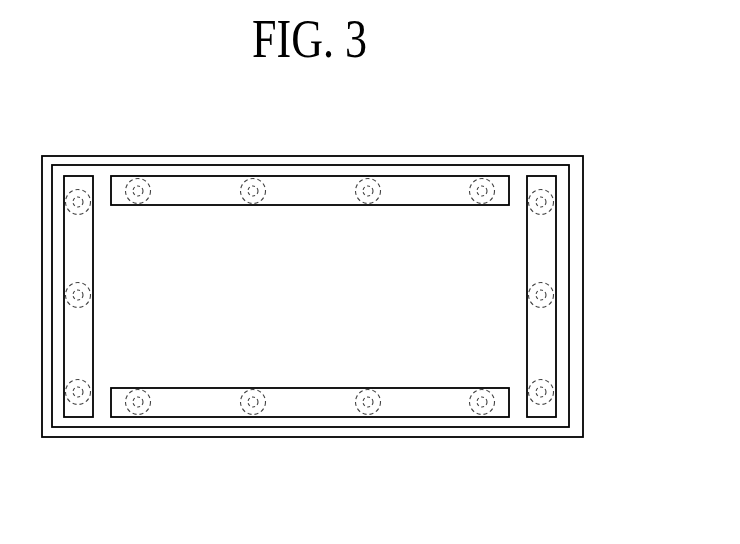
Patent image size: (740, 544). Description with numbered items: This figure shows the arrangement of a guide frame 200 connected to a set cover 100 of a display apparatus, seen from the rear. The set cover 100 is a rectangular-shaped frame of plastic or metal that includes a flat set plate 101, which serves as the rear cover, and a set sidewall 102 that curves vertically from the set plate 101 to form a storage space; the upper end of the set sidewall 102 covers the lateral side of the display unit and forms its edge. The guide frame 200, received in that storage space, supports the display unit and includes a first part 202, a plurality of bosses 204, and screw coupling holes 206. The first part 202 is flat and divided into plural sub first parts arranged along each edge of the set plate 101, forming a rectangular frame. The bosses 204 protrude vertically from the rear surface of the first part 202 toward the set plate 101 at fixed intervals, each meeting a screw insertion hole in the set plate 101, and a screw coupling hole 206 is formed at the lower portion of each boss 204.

The set cover 100 is at (312, 345).
The set plate 101 is at (421, 368).
The set sidewall 102 is at (467, 432).
The guide frame 200 is at (385, 296).
The first part 202 is at (547, 248).
The bosses 204 is at (548, 302).
The screw coupling hole 206 is at (541, 295).